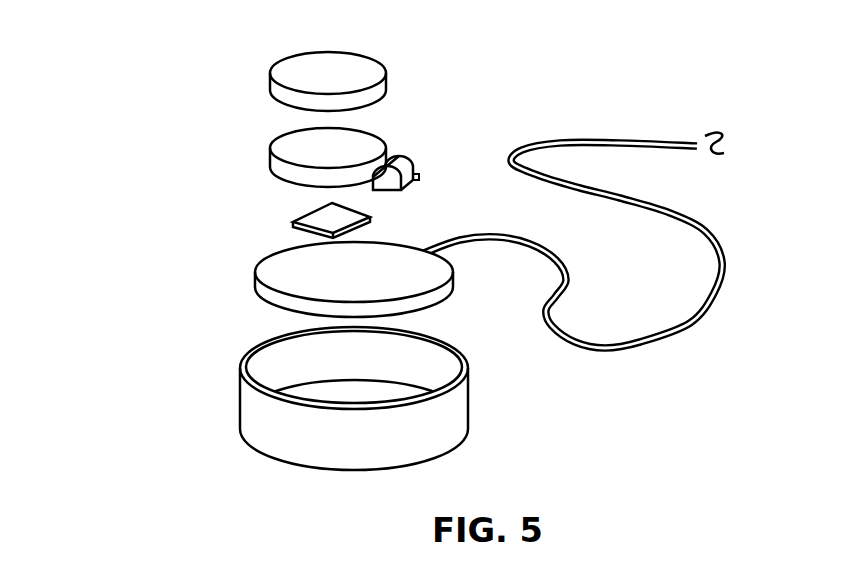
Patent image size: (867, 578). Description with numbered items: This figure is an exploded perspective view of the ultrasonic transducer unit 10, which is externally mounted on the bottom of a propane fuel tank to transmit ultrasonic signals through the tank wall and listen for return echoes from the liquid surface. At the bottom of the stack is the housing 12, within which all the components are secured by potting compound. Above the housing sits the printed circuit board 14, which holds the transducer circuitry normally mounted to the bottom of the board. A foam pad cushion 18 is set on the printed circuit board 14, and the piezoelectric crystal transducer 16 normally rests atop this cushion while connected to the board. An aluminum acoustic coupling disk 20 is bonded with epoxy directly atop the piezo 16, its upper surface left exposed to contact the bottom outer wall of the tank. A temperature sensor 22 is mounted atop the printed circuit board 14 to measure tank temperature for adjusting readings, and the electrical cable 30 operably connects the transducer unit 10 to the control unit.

The transducer unit 10 is at (124, 211).
The housing 12 is at (247, 372).
The printed circuit board 14 is at (280, 275).
The piezoelectric crystal transducer 16 is at (290, 148).
The foam pad cushion 18 is at (308, 225).
The aluminum acoustic coupling disk 20 is at (290, 73).
The temperature sensor 22 is at (403, 162).
The electrical cable 30 is at (682, 325).